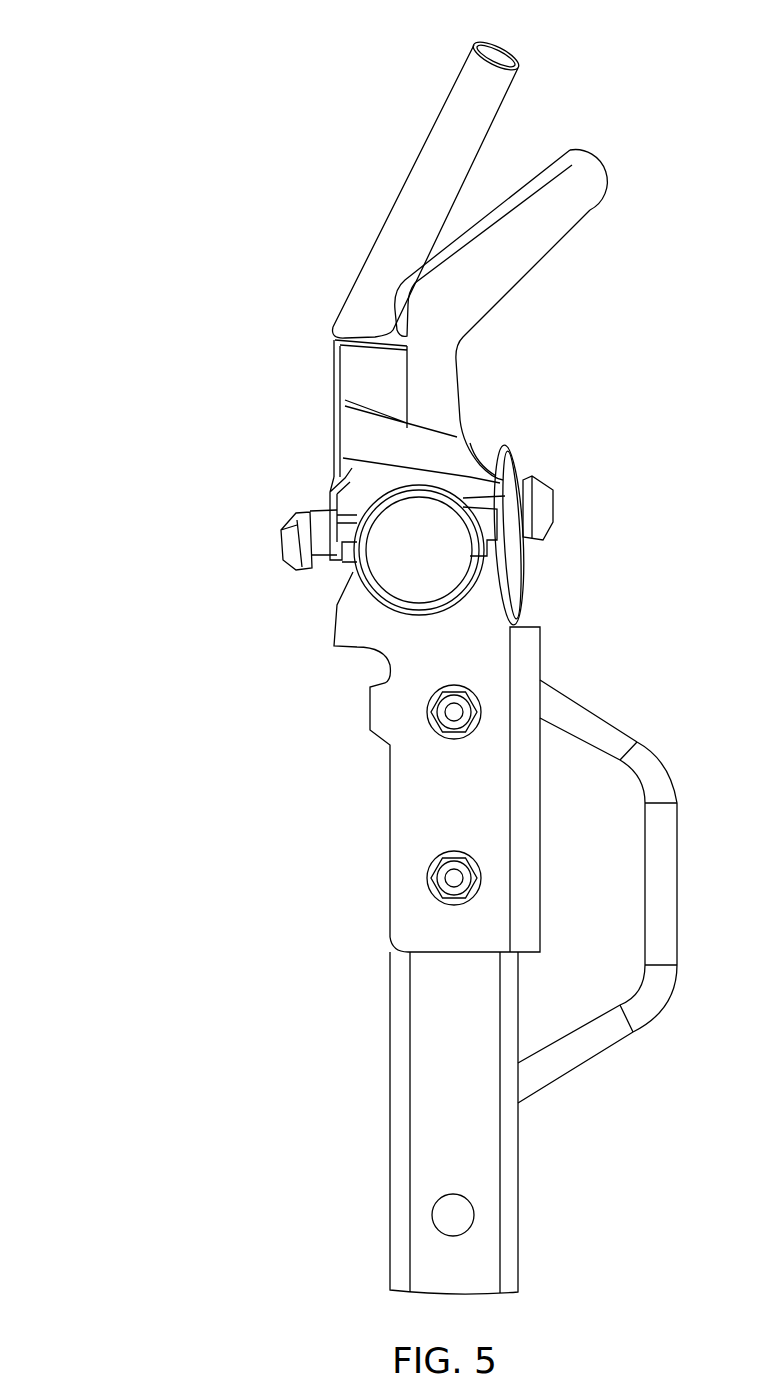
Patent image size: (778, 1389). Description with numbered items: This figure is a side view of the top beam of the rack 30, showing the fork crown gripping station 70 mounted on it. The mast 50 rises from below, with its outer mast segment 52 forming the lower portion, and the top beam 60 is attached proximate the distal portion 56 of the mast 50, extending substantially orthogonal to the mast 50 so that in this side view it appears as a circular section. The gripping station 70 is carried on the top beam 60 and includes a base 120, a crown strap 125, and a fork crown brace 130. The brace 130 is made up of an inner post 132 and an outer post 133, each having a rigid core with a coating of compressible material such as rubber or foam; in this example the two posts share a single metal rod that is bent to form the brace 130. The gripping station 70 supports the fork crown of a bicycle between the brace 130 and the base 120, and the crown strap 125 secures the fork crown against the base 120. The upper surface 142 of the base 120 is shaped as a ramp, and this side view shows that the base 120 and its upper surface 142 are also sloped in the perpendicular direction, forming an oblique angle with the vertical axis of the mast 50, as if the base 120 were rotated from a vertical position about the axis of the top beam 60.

The rack 30 is at (110, 78).
The fork crown brace 130 is at (580, 80).
The outer post 133 is at (410, 190).
The inner post 132 is at (572, 213).
The fork crown gripping station 70 is at (285, 265).
The upper surface 142 is at (357, 377).
The base 120 is at (345, 460).
The crown strap 125 is at (508, 450).
The top beam 60 is at (465, 555).
The distal portion 56 is at (365, 790).
The mast 50 is at (365, 1050).
The outer mast segment 52 is at (510, 1173).